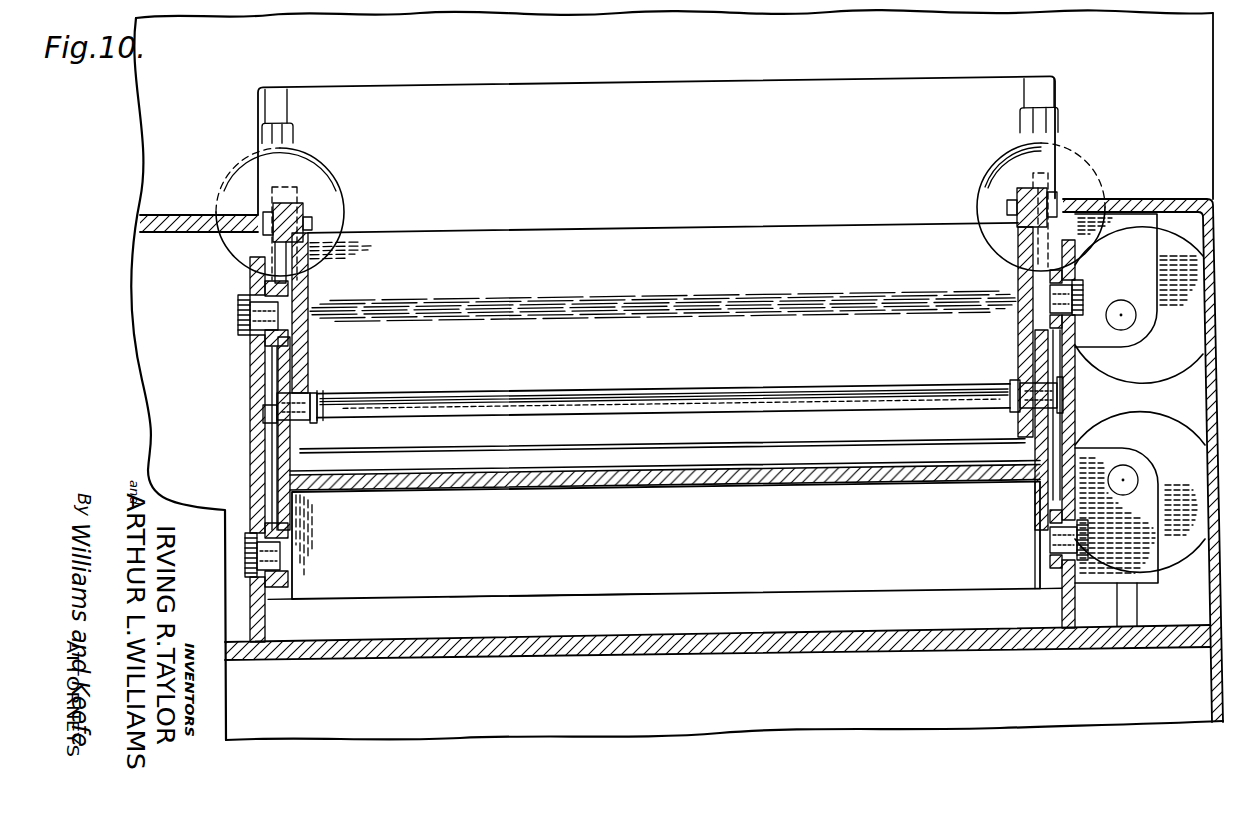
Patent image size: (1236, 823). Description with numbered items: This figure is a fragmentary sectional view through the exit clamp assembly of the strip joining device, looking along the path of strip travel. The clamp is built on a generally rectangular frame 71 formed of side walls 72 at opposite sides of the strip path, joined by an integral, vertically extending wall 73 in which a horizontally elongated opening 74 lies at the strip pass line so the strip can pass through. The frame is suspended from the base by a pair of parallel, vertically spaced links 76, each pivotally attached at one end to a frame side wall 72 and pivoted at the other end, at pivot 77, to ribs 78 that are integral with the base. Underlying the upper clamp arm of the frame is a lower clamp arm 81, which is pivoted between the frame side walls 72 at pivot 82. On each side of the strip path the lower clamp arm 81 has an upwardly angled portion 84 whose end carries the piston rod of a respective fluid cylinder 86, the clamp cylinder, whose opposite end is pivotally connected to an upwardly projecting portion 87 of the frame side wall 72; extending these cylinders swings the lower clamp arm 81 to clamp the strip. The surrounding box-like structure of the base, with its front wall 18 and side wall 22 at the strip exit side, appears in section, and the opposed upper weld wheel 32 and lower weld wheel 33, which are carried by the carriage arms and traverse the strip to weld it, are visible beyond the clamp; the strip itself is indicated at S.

The side wall 22 is at (1134, 64).
The front wall 18 is at (1217, 163).
The upwardly projecting portion 87 is at (330, 157).
The fluid cylinder 86 is at (318, 205).
The upwardly angled portion 84 is at (297, 290).
The pivot 77 is at (257, 313).
The links 76 is at (253, 367).
The ribs 78 is at (262, 433).
The pivot 82 is at (293, 407).
The screw shaft S is at (627, 402).
The lower clamp arm 81 is at (792, 438).
The opening 74 is at (846, 440).
The wall 73 is at (707, 547).
The frame 71 is at (537, 607).
The side walls 72 is at (290, 505).
The upper weld wheel 32 is at (1166, 372).
The lower weld wheel 33 is at (1186, 470).